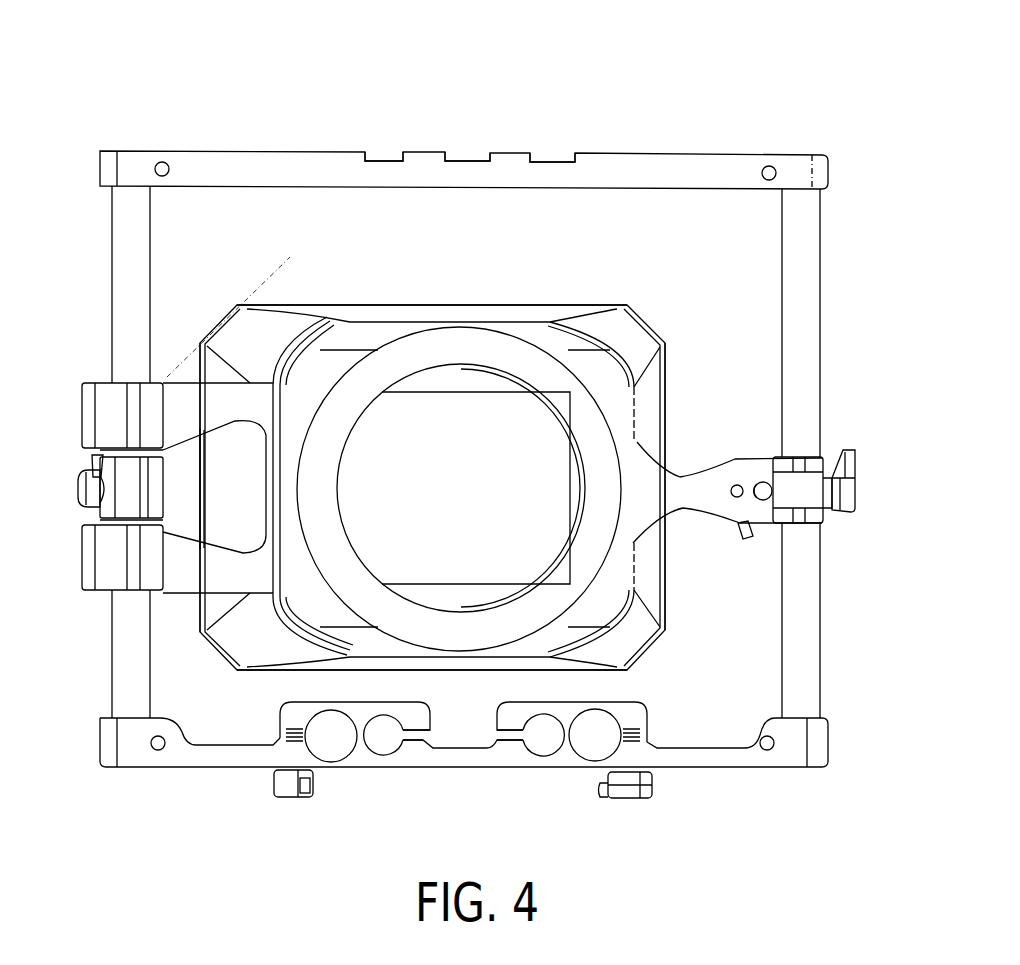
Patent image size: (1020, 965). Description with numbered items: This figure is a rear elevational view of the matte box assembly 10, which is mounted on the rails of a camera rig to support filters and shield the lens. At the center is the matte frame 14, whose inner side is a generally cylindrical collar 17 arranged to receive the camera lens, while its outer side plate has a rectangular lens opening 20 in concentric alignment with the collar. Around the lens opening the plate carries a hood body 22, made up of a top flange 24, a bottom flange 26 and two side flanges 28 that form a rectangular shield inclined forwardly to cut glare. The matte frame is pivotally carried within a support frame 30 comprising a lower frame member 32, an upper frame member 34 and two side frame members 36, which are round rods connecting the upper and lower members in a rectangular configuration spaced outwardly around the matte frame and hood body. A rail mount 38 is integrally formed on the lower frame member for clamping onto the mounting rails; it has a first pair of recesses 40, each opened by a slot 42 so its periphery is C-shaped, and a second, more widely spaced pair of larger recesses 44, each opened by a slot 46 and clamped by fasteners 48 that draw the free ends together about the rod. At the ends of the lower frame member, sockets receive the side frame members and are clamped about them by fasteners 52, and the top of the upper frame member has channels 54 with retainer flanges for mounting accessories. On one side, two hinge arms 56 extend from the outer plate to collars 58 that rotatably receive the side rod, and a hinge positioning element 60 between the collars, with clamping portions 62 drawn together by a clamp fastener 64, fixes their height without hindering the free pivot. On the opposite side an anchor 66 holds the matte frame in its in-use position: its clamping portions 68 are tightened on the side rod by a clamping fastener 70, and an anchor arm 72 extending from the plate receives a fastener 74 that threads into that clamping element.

The matte box assembly 10 is at (333, 64).
The matte frame 14 is at (590, 291).
The cylindrical collar 17 is at (336, 468).
The lens opening 20 is at (463, 396).
The hood body 22 is at (655, 322).
The top flange 24 is at (410, 305).
The bottom flange 26 is at (560, 665).
The side flanges 28 is at (215, 605).
The support frame 30 is at (760, 782).
The lower frame member 32 is at (705, 765).
The upper frame member 34 is at (705, 160).
The side frame members 36 is at (815, 210).
The rail mount 38 is at (366, 780).
The first pair of recesses 40 is at (385, 757).
The slot 42 is at (427, 748).
The second pair of recesses 44 is at (335, 762).
The slot 46 is at (641, 745).
The fasteners 48 is at (285, 797).
The fasteners 52 is at (166, 164).
The channels 54 is at (466, 160).
The hinge arms 56 is at (195, 393).
The collars 58 is at (105, 395).
The hinge positioning element 60 is at (73, 460).
The clamping portions 62 is at (120, 523).
The clamp fastener 64 is at (82, 488).
The anchor 66 is at (839, 422).
The clamping portions 68 is at (808, 512).
The clamping fastener 70 is at (853, 490).
The anchor arm 72 is at (690, 492).
The fastener 74 is at (745, 541).